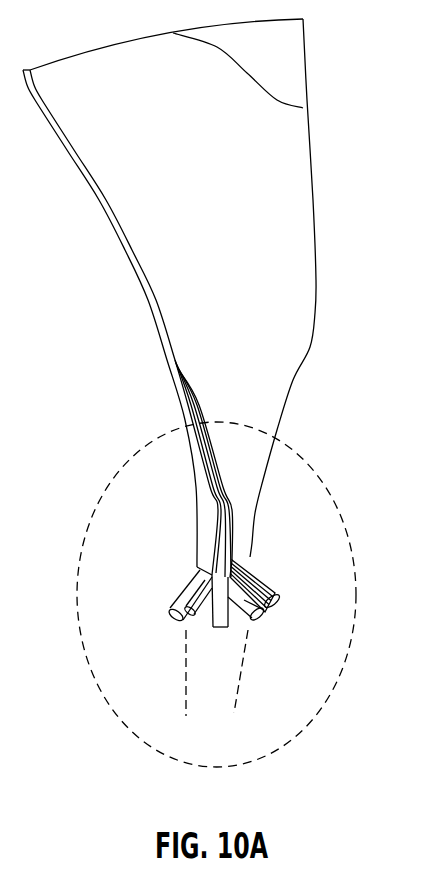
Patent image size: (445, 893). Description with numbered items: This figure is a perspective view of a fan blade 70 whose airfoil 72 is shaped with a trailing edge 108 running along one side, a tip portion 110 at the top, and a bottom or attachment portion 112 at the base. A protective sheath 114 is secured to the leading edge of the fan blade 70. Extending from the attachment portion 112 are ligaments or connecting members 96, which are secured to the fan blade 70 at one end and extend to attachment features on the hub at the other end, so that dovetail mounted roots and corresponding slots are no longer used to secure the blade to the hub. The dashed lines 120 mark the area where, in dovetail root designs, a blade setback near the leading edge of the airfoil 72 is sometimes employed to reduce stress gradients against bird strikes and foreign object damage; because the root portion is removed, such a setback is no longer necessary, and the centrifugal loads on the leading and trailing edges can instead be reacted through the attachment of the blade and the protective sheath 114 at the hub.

The fan blade 70 is at (217, 367).
The airfoil 72 is at (138, 135).
The ligaments or connecting members 96 is at (180, 593).
The trailing edge 108 is at (315, 238).
The tip portion 110 is at (304, 108).
The bottom or attachment portion 112 is at (253, 533).
The protective sheath 114 is at (188, 408).
The dashed lines 120 is at (356, 539).